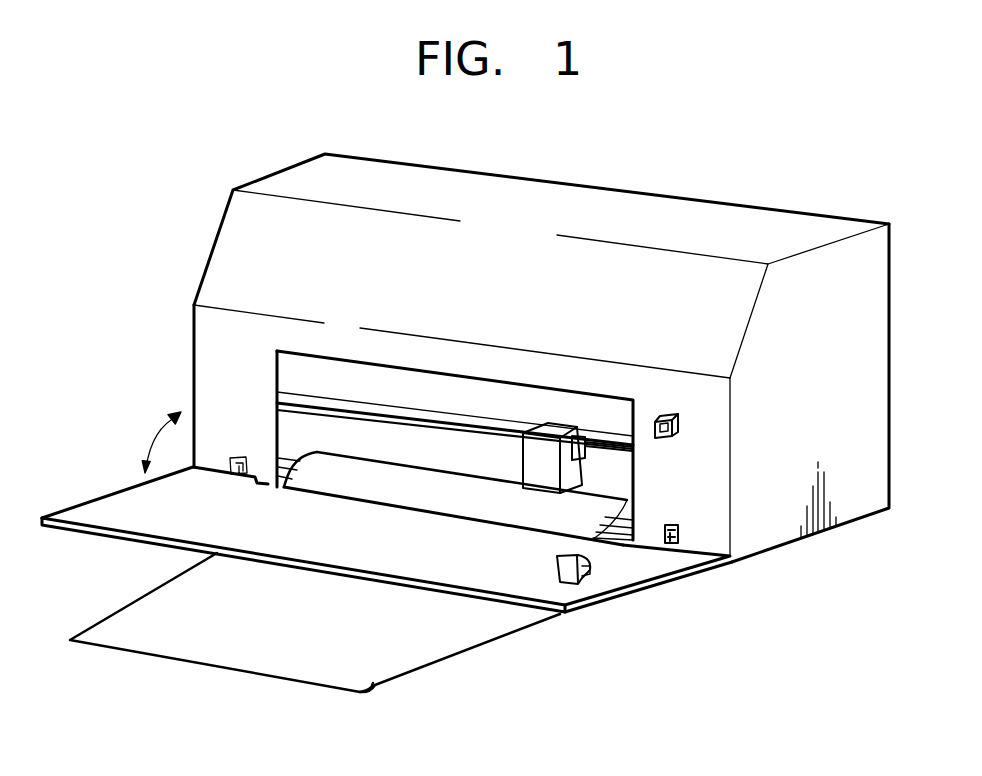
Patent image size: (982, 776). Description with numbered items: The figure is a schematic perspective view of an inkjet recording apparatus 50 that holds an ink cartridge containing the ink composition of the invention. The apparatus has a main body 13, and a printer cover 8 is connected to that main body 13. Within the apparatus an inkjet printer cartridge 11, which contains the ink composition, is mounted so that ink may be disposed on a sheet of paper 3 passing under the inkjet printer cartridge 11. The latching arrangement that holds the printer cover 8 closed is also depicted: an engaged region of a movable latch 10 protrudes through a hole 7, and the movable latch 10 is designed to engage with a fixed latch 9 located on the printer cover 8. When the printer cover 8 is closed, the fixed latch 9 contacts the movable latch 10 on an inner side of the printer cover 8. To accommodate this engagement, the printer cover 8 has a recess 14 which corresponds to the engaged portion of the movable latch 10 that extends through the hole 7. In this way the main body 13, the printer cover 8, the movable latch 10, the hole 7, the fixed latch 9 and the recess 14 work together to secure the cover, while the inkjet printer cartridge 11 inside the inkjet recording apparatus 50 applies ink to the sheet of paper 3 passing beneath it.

The inkjet recording apparatus 50 is at (817, 180).
The main body 13 is at (671, 207).
The inkjet printer cartridge 11 is at (528, 465).
The hole 7 is at (670, 441).
The movable latch 10 is at (680, 425).
The printer cover 8 is at (538, 590).
The fixed latch 9 is at (580, 584).
The recess 14 is at (586, 578).
The sheet of paper 3 is at (265, 678).